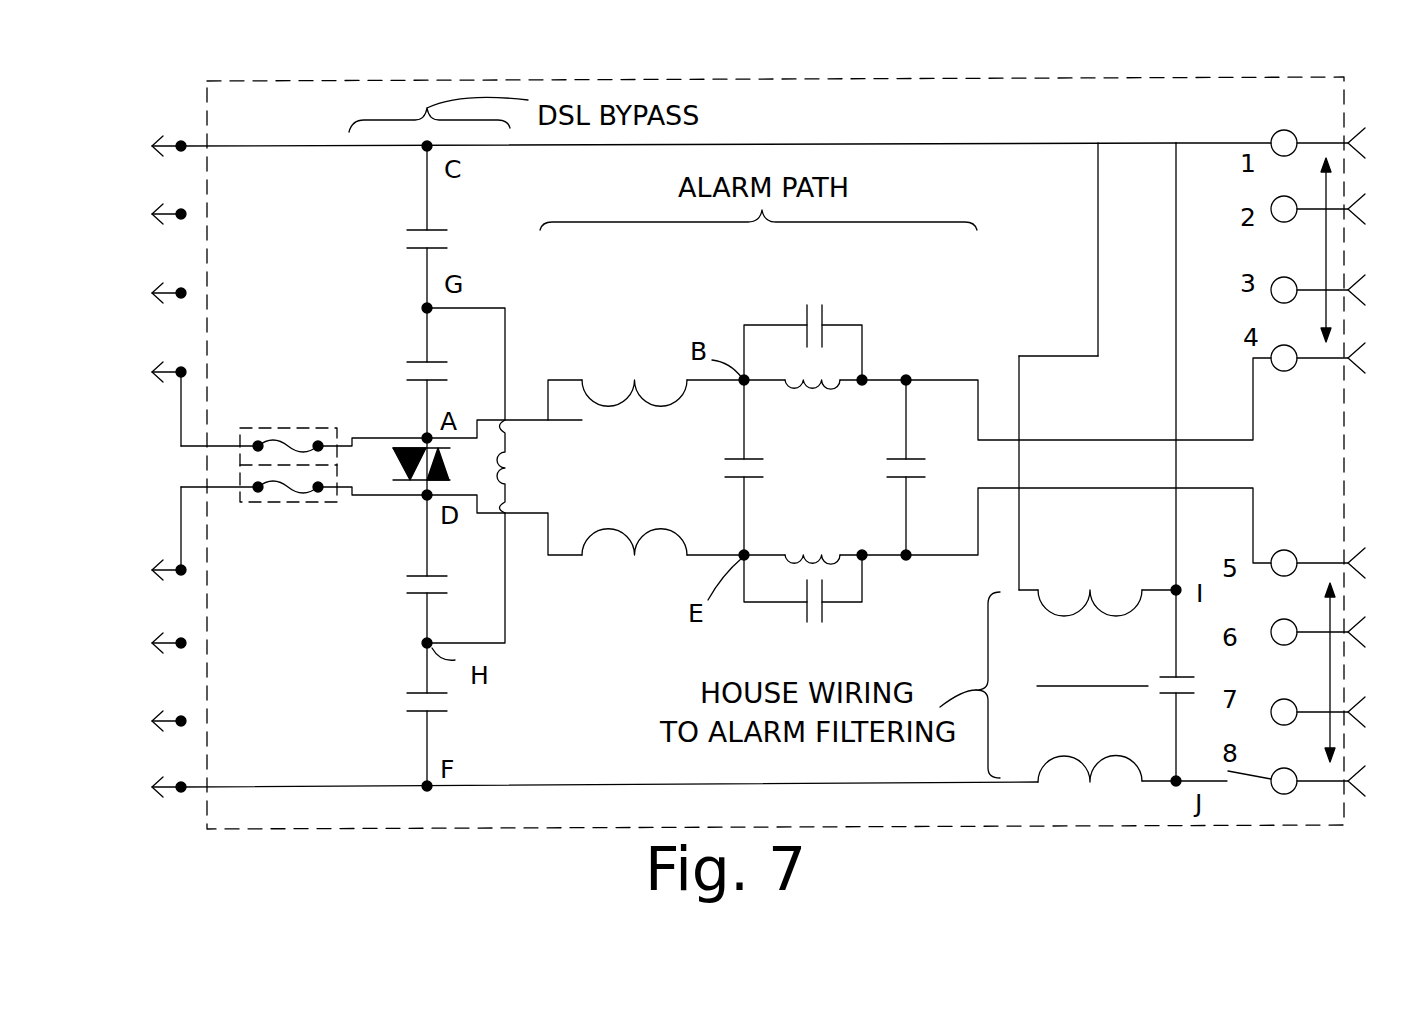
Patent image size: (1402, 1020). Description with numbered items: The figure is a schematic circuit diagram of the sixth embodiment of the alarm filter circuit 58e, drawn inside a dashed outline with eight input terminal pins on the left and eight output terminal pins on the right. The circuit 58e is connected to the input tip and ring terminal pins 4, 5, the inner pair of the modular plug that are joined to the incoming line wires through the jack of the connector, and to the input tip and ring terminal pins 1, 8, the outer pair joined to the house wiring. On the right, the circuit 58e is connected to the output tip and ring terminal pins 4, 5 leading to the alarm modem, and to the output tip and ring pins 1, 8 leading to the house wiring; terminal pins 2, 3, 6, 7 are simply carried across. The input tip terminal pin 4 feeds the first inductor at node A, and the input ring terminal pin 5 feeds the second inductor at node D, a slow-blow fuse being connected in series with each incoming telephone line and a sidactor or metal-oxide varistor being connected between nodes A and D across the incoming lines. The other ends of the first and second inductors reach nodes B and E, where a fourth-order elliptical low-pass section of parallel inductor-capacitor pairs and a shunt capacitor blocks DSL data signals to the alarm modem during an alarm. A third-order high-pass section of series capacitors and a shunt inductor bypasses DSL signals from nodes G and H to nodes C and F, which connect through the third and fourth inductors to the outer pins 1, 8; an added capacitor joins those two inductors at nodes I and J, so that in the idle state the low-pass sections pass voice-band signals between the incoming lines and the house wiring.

The alarm filter circuit 58e is at (1238, 86).
The tip terminal pin 1 is at (169, 163).
The terminal 2 is at (169, 234).
The terminal 3 is at (169, 314).
The tip terminal pin 4 is at (169, 393).
The ring terminal pin 5 is at (154, 573).
The terminal 6 is at (154, 646).
The terminal 7 is at (154, 725).
The ring terminal pin 8 is at (154, 792).